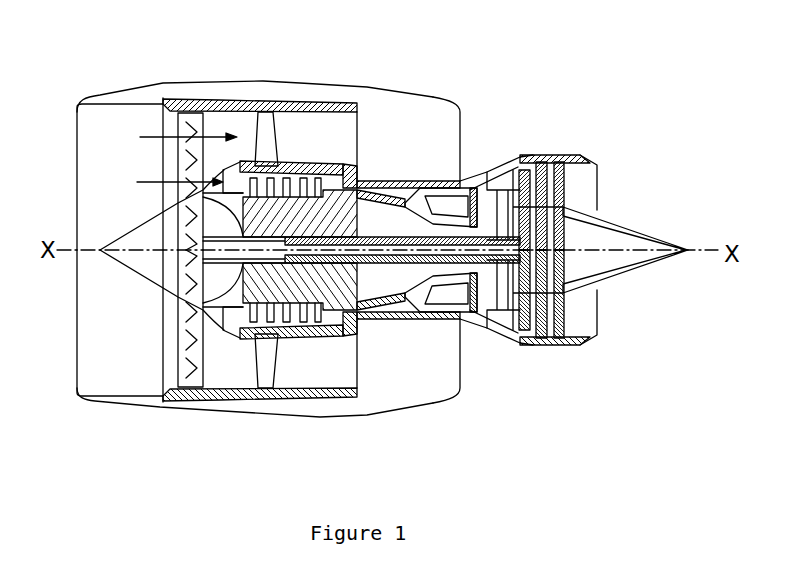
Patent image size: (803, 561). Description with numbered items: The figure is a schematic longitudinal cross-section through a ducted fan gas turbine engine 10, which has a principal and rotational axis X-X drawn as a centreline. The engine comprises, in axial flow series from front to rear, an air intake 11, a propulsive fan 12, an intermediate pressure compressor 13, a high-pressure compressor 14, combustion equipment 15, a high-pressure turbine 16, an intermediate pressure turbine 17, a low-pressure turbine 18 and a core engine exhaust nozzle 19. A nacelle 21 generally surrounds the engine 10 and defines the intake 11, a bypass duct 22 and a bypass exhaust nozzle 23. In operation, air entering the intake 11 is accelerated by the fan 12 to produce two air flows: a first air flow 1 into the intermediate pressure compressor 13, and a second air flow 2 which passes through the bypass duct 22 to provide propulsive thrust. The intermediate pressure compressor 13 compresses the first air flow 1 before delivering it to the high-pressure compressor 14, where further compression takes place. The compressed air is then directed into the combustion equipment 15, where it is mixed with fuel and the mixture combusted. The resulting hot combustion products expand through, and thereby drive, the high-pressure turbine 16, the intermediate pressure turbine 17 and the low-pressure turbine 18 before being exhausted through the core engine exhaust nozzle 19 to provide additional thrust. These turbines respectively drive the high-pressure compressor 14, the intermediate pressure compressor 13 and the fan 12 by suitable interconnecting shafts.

The ducted fan gas turbine engine 10 is at (140, 63).
The air intake 11 is at (118, 108).
The propulsive fan 12 is at (180, 348).
The intermediate pressure compressor 13 is at (290, 326).
The high-pressure compressor 14 is at (407, 183).
The combustion equipment 15 is at (417, 306).
The high-pressure turbine 16 is at (467, 322).
The intermediate pressure turbine 17 is at (500, 173).
The low-pressure turbine 18 is at (513, 343).
The core engine exhaust nozzle 19 is at (593, 158).
The nacelle 21 is at (273, 80).
The bypass duct 22 is at (434, 143).
The bypass exhaust nozzle 23 is at (458, 105).
The first air flow 1 is at (143, 184).
The second air flow 2 is at (143, 138).